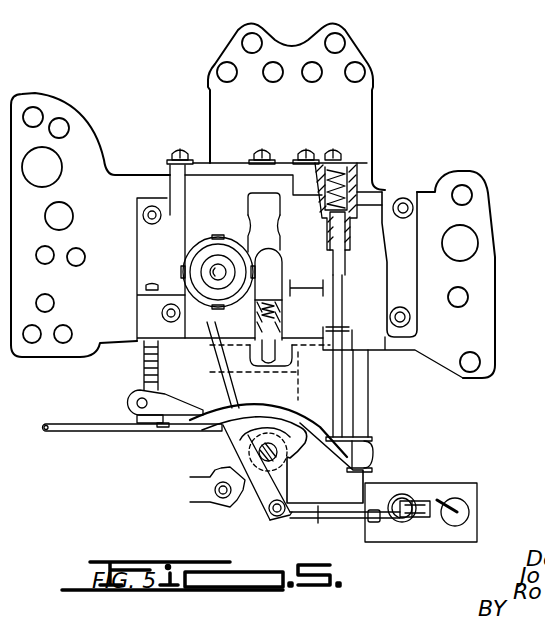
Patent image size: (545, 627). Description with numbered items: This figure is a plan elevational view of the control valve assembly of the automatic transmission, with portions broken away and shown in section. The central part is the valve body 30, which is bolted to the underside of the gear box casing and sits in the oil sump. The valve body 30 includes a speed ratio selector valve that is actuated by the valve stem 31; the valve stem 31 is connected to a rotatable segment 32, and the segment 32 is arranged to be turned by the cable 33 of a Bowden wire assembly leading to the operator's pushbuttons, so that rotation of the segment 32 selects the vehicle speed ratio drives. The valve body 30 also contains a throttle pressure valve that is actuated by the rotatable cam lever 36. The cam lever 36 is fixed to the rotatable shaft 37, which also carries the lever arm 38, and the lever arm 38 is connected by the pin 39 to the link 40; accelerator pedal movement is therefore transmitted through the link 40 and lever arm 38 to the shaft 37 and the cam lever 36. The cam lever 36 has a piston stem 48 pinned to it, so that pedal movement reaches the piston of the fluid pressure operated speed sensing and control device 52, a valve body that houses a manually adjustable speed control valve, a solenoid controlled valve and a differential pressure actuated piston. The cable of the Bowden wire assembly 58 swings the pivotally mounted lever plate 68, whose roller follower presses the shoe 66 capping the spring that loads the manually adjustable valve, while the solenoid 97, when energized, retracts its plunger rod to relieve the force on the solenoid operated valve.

The valve body 30 is at (403, 195).
The valve stem 31 is at (358, 383).
The rotatable segment 32 is at (203, 386).
The cable 33 is at (62, 422).
The cam lever 36 is at (288, 482).
The rotatable shaft 37 is at (256, 450).
The lever arm 38 is at (238, 466).
The pin 39 is at (225, 498).
The link 40 is at (190, 494).
The piston stem 48 is at (318, 512).
The speed sensing and control device 52 is at (478, 486).
The Bowden wire assembly 58 is at (375, 525).
The shoe 66 is at (403, 500).
The lever plate 68 is at (410, 503).
The solenoid 97 is at (460, 513).